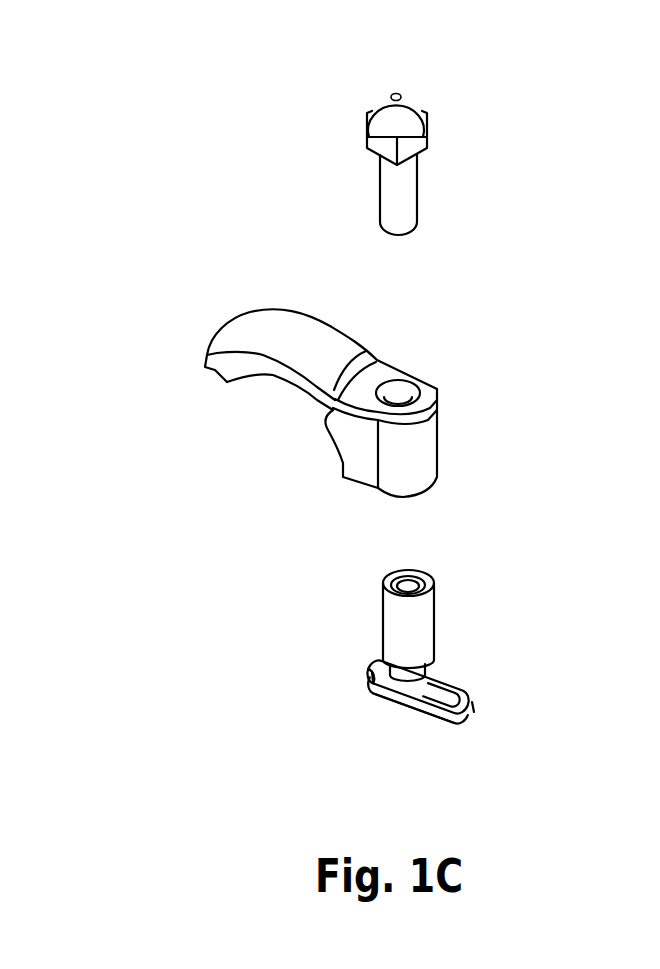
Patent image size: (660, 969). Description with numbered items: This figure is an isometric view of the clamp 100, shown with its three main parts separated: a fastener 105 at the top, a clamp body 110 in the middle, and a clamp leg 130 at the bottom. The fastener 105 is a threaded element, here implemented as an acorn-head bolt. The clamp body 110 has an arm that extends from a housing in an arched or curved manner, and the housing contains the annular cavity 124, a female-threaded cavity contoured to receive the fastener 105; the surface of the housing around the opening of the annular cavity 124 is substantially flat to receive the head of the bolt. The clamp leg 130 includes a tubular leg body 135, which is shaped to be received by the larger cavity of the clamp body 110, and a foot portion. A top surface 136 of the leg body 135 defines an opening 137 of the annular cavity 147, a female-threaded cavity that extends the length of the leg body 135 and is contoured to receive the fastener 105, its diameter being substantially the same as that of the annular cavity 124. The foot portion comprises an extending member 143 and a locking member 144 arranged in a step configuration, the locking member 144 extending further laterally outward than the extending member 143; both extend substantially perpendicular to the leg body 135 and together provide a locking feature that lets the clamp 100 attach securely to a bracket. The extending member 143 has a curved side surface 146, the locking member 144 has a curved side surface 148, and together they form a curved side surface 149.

The clamp 100 is at (222, 90).
The fastener 105 is at (430, 203).
The clamp body 110 is at (222, 320).
The annular cavity 124 is at (409, 384).
The clamp leg 130 is at (362, 573).
The leg body 135 is at (426, 593).
The top surface 136 is at (428, 583).
The opening 137 is at (393, 580).
The annular cavity 147 is at (437, 555).
The curved side surface 149 is at (372, 668).
The extending member 143 is at (443, 672).
The locking member 144 is at (463, 690).
The curved side surface 148 is at (470, 711).
The curved side surface 146 is at (433, 712).